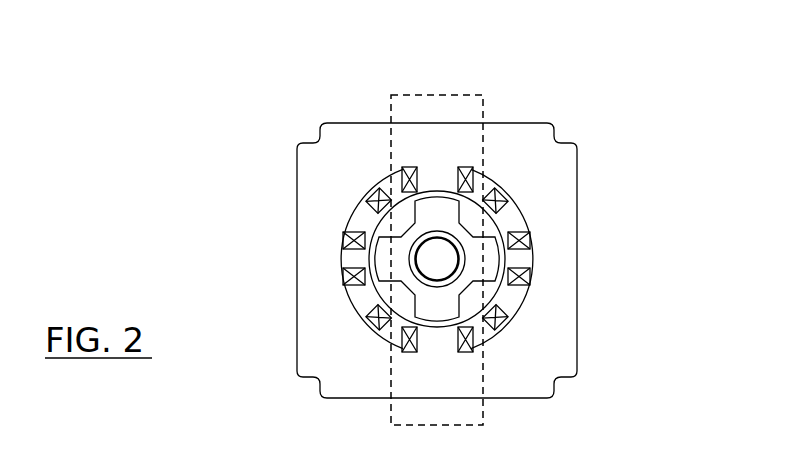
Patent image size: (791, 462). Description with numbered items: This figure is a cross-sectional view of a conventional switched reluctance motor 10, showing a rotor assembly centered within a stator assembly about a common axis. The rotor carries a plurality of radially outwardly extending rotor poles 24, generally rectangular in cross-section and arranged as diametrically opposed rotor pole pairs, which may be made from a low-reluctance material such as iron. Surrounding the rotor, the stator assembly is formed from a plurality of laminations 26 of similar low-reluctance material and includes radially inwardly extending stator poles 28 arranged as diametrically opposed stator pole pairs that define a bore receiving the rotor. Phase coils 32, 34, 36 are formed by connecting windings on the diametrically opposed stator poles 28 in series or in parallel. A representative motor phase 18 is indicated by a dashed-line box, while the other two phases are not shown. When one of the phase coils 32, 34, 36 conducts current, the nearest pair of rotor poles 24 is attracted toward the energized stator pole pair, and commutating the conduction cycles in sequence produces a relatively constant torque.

The switched reluctance motor 10 is at (620, 56).
The motor phase 18 is at (483, 415).
The rotor poles 24 is at (372, 261).
The laminations 26 is at (577, 243).
The stator poles 28 is at (350, 224).
The phase coil 32 is at (410, 352).
The phase coil 34 is at (505, 328).
The phase coil 36 is at (532, 236).